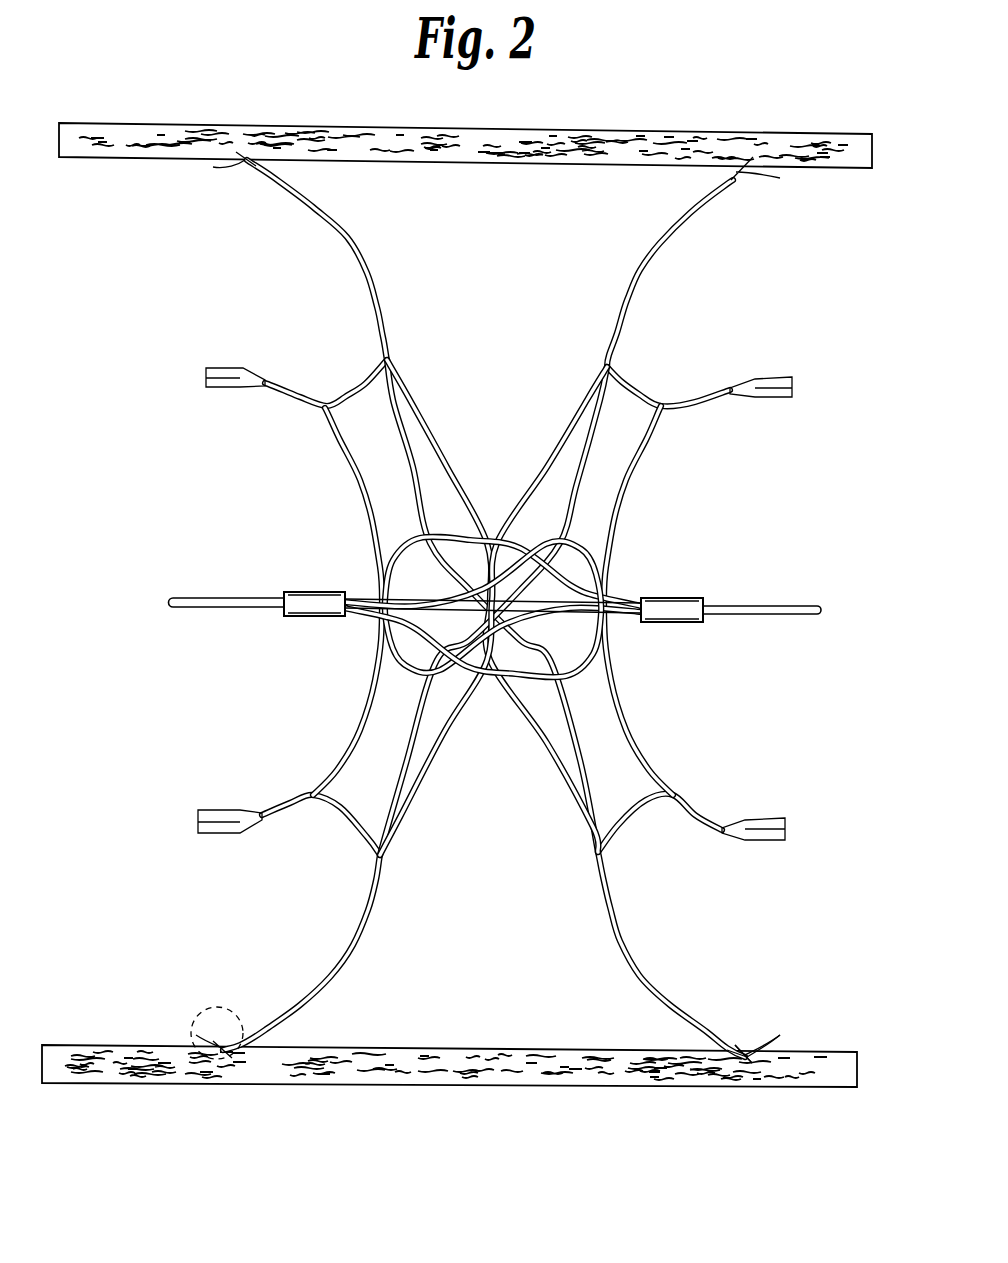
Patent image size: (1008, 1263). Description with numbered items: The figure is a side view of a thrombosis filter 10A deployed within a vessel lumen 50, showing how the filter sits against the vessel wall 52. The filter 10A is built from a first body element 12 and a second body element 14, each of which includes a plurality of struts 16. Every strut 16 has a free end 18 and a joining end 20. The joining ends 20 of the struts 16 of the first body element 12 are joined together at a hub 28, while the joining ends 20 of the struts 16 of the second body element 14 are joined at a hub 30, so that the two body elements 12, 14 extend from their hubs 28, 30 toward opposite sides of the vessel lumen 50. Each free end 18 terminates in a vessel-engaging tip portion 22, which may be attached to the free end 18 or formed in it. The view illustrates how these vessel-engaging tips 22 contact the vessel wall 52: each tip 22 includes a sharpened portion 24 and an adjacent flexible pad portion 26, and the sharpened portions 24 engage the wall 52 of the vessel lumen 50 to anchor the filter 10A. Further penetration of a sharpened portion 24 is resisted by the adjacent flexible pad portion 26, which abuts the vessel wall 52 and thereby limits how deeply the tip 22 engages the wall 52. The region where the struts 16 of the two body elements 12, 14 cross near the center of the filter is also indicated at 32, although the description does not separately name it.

The thrombosis filter 10A is at (783, 325).
The first body element 12 is at (715, 588).
The second body element 14 is at (245, 570).
The struts 16 is at (352, 240).
The free end 18 is at (707, 1018).
The joining end 20 is at (333, 616).
The vessel-engaging tip portion 22 is at (210, 1007).
The sharpened portion 24 is at (710, 1057).
The flexible pad portion 26 is at (757, 1040).
The hub 28 is at (655, 598).
The hub 30 is at (333, 592).
The strut crossing 32 is at (488, 655).
The vessel lumen 50 is at (152, 422).
The vessel wall 52 is at (150, 150).